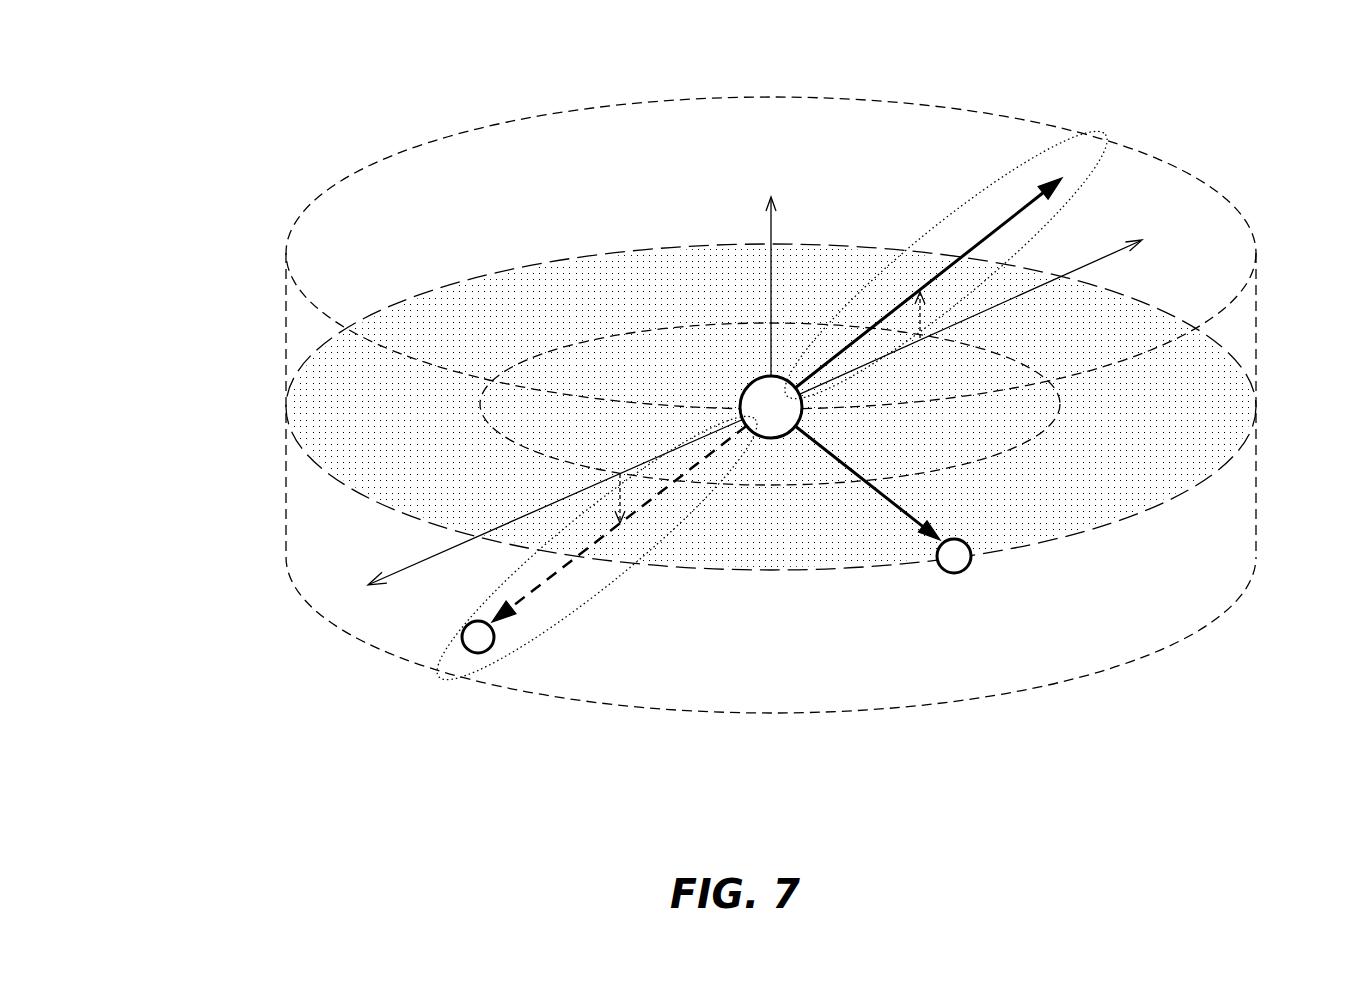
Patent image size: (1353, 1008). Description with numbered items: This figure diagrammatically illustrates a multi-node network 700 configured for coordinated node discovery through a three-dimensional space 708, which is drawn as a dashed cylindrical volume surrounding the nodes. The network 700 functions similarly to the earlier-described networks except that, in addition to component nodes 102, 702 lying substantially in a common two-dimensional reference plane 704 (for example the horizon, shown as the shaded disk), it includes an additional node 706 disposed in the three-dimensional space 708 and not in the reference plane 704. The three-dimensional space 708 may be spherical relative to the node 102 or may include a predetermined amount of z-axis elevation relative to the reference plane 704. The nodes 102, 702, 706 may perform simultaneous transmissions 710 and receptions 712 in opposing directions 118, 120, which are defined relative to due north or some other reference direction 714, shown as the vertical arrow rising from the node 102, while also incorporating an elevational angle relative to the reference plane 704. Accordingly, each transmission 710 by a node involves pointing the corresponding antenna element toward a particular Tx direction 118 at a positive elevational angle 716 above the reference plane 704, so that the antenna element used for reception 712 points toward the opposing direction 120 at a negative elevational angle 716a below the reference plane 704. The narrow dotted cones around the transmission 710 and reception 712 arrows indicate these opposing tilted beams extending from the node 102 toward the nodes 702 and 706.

The multi-node network 700 is at (185, 67).
The three-dimensional (3D) space 708 is at (388, 157).
The two-dimensional reference plane 704 is at (333, 373).
The node 102 is at (790, 420).
The reference direction 714 is at (770, 234).
The transmission 710 is at (1006, 214).
The Tx direction 118 is at (1098, 261).
The elevational angle ε 716 is at (915, 290).
The elevational angle −ε 716a is at (618, 502).
The reception 712 is at (543, 577).
The opposing direction 120 is at (397, 568).
The additional node 706 is at (463, 653).
The component node 702 is at (968, 571).